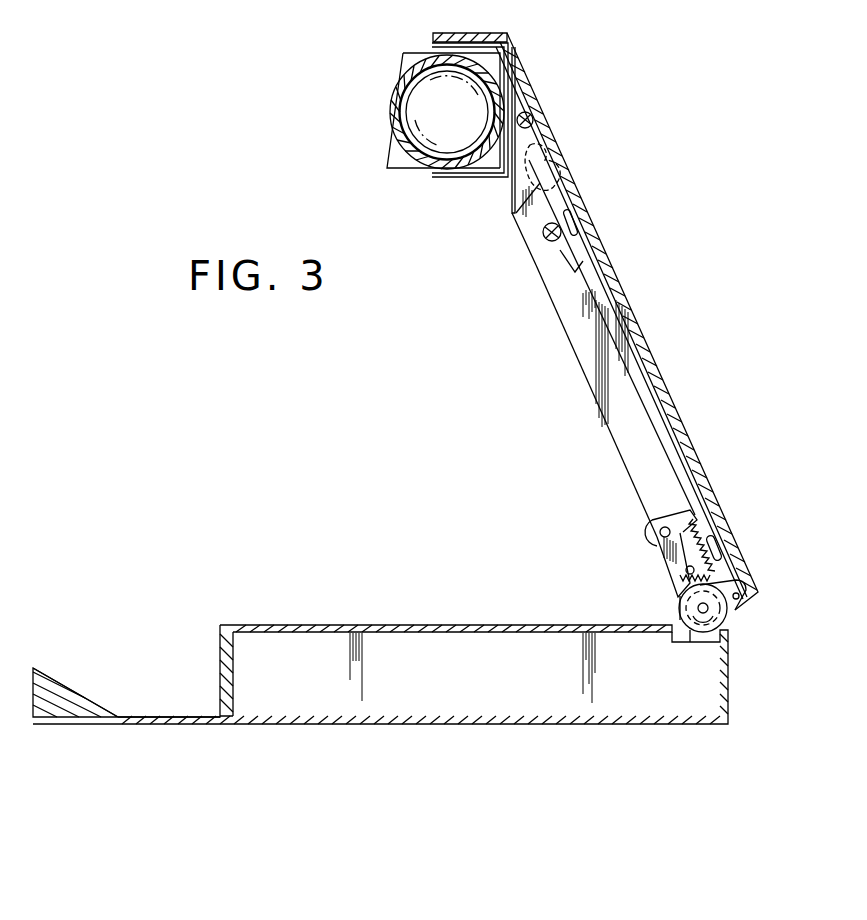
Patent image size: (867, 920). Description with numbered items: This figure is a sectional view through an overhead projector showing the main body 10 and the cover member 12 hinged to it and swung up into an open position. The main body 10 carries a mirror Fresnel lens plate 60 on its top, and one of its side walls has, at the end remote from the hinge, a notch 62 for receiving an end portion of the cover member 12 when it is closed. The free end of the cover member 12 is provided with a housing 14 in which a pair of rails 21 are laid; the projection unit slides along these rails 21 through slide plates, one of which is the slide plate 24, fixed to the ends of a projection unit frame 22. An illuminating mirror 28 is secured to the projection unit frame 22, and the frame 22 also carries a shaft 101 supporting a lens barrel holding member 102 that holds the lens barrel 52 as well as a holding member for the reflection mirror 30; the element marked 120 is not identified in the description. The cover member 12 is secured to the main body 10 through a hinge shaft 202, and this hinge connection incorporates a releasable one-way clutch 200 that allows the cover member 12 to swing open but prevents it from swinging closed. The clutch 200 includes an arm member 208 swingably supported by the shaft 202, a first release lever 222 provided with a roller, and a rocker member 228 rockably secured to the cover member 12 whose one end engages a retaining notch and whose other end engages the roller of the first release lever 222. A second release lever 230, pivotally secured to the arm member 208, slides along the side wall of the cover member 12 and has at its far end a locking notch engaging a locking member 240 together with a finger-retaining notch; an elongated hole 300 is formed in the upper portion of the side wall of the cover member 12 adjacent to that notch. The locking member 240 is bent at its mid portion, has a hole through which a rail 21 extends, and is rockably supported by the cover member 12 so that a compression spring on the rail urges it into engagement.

The main body 10 is at (632, 700).
The cover member 12 is at (645, 320).
The housing 14 is at (507, 33).
The rails 21 is at (534, 122).
The projection unit frame 22 is at (513, 214).
The slide plate 24 is at (512, 188).
The illuminating mirror 28 is at (390, 167).
The reflection mirror 30 is at (403, 58).
The lens barrel 52 is at (392, 100).
The mirror Fresnel lens plate 60 is at (430, 625).
The notch 62 is at (158, 716).
The shaft 101 is at (519, 101).
The lens barrel holding member 102 is at (432, 48).
The lens 120 is at (398, 112).
The one-way clutch 200 is at (733, 614).
The hinge shaft 202 is at (708, 608).
The arm member 208 is at (735, 580).
The first release lever 222 is at (652, 525).
The rocker member 228 is at (662, 564).
The second release lever 230 is at (657, 408).
The locking member 240 is at (568, 280).
The elongated hole 300 is at (547, 152).